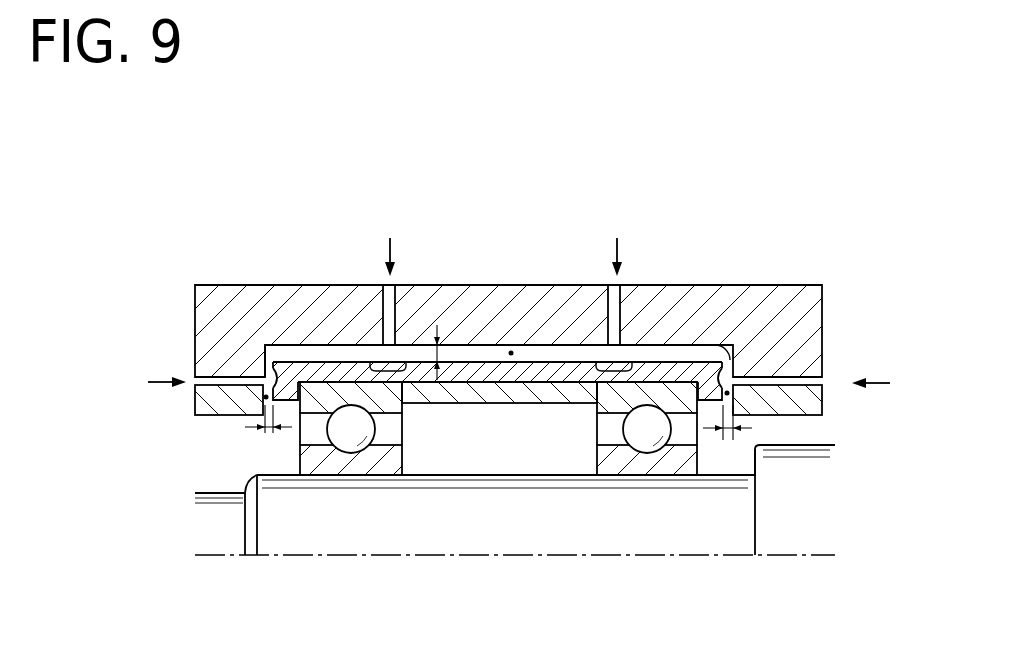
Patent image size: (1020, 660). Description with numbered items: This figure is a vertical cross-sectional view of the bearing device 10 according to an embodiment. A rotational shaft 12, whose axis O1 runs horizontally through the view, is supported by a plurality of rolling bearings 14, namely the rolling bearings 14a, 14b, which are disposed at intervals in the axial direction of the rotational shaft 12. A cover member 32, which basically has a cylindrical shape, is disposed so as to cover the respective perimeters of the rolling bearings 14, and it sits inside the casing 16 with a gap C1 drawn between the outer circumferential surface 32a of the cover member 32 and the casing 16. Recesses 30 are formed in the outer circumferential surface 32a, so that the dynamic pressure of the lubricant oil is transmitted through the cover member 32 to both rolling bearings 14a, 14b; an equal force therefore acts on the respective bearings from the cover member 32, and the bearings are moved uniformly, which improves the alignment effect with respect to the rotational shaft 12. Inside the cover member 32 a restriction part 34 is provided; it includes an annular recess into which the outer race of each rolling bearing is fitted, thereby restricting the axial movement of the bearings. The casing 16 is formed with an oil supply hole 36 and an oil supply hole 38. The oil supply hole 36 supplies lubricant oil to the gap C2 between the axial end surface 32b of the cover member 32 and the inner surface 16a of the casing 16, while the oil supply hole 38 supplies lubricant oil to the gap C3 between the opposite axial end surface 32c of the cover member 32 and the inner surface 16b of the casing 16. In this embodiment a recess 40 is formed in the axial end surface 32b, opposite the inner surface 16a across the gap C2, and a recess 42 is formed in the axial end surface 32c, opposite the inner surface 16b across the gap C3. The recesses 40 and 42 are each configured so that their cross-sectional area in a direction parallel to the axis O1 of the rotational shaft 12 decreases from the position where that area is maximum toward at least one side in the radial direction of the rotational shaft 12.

The bearing device 10 is at (547, 125).
The rotational shaft 12 is at (668, 543).
The rolling bearing 14 is at (498, 502).
The rolling bearing 14a is at (403, 425).
The rolling bearing 14b is at (590, 425).
The casing 16 is at (768, 296).
The inner surface of the casing 16a is at (276, 378).
The inner surface of the casing 16b is at (727, 343).
The recess 30 is at (383, 366).
The cover member 32 is at (660, 372).
The outer circumferential surface 32a is at (719, 358).
The axial end surface 32b is at (264, 368).
The axial end surface 32c is at (723, 384).
The restriction part 34 is at (530, 403).
The oil supply hole 36 is at (216, 368).
The oil supply hole 38 is at (822, 355).
The recess 40 is at (270, 398).
The recess 42 is at (785, 345).
The first clearance C1 is at (511, 353).
The gap C2 is at (265, 397).
The gap C3 is at (727, 393).
The axis O1 is at (777, 558).